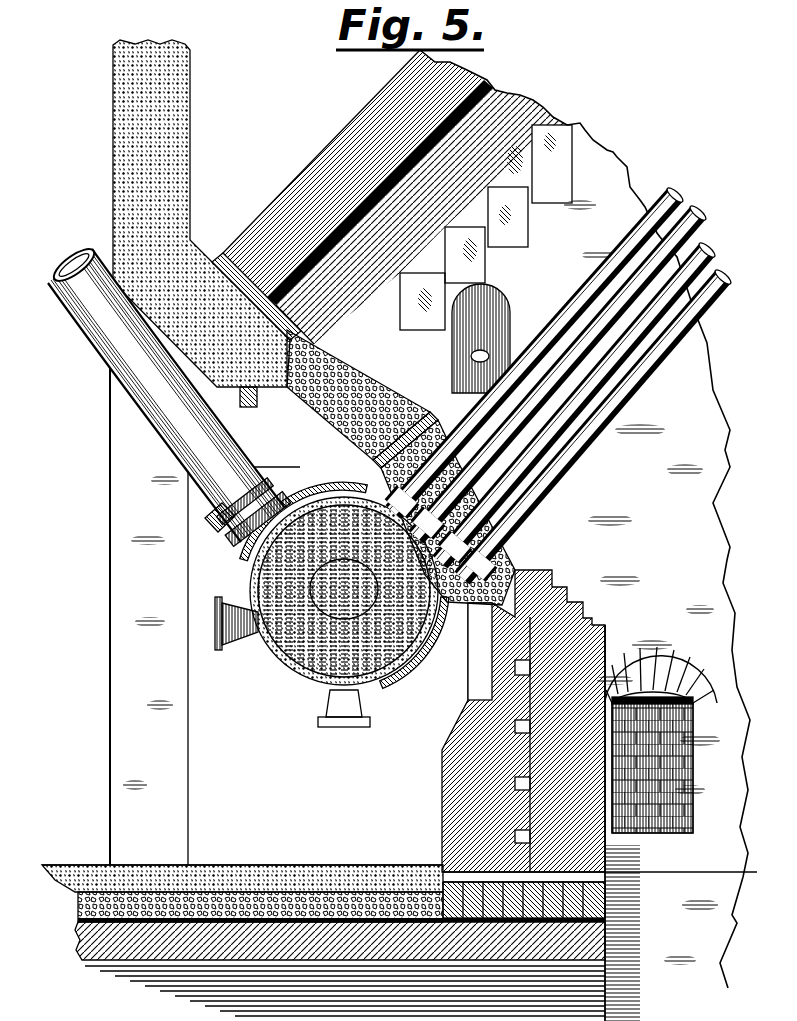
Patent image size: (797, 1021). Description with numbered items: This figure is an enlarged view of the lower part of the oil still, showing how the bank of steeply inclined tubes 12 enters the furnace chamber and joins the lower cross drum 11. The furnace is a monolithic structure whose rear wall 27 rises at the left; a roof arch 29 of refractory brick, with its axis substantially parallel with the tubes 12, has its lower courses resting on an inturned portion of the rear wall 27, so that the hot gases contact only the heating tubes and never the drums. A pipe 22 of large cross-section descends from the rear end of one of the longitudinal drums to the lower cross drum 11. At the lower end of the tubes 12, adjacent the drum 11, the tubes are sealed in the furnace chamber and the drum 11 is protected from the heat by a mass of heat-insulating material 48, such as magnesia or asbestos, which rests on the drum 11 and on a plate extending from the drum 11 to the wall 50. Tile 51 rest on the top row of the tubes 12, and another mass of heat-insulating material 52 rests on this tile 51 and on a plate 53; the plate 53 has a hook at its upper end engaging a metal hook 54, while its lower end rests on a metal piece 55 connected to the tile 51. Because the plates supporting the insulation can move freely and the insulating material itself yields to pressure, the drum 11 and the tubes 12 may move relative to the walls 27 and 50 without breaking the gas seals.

The lower cross drum 11 is at (300, 655).
The tubes 12 is at (572, 410).
The pipe 22 is at (70, 346).
The rear wall 27 is at (191, 114).
The roof arch 29 is at (328, 166).
The mass of heat-insulating material 48 is at (495, 550).
The wall 50 is at (597, 627).
The tile 51 is at (420, 420).
The mass of heat-insulating material 52 is at (400, 393).
The plate 53 is at (250, 448).
The metal hook 54 is at (240, 415).
The metal piece 55 is at (350, 462).